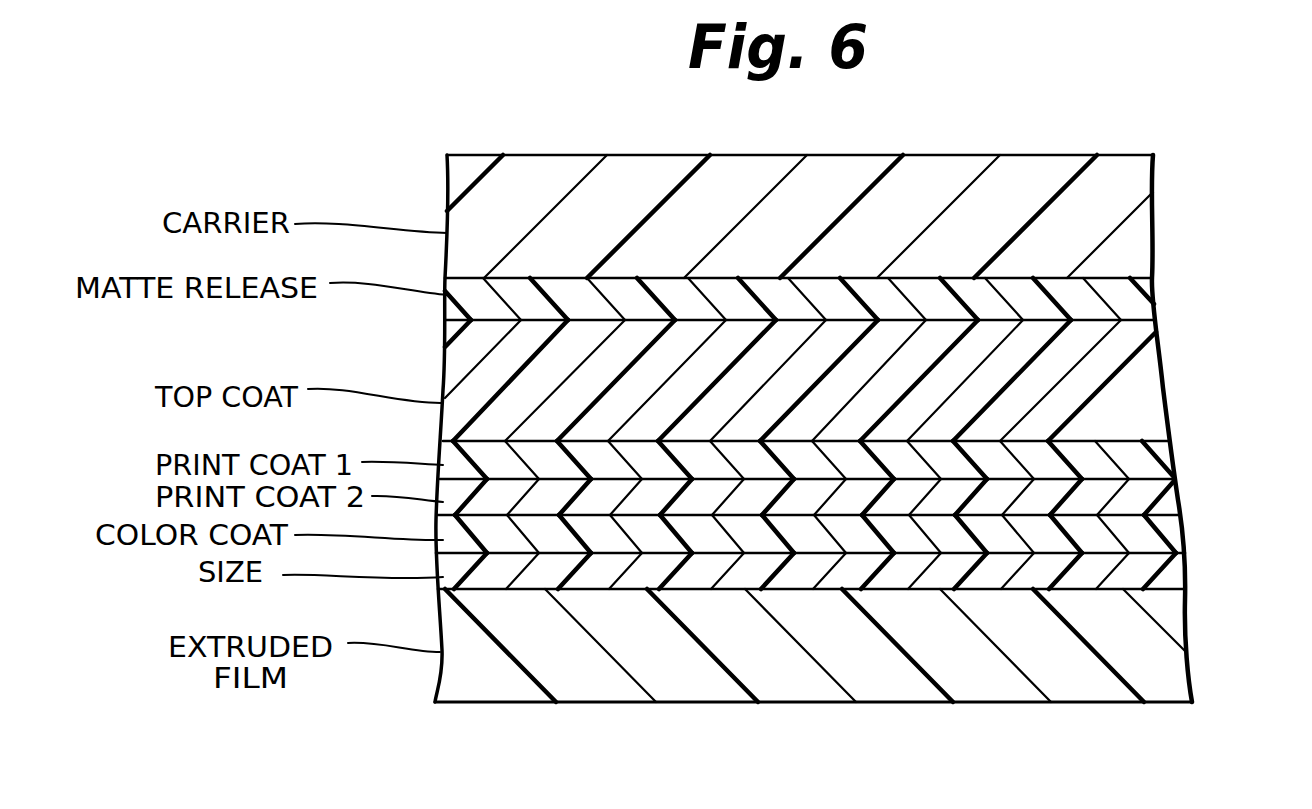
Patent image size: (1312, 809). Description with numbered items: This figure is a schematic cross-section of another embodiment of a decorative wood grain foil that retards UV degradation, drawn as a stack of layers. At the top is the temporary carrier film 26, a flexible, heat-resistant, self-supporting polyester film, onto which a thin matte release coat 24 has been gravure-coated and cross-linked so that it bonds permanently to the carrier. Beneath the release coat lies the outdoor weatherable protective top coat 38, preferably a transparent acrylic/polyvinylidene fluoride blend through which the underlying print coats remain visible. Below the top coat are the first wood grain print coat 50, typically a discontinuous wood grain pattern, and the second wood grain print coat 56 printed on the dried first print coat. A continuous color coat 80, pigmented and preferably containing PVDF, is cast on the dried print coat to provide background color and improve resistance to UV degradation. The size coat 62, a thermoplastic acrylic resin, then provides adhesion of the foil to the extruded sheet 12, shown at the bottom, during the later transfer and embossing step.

The carrier film 26 is at (1153, 217).
The matte release coat 24 is at (1153, 305).
The top coat 38 is at (1163, 392).
The first wood grain print coat 50 is at (1170, 462).
The second wood grain print coat 56 is at (1178, 505).
The color coat 80 is at (1185, 540).
The size coat 62 is at (1185, 576).
The extruded sheet 12 is at (1185, 645).